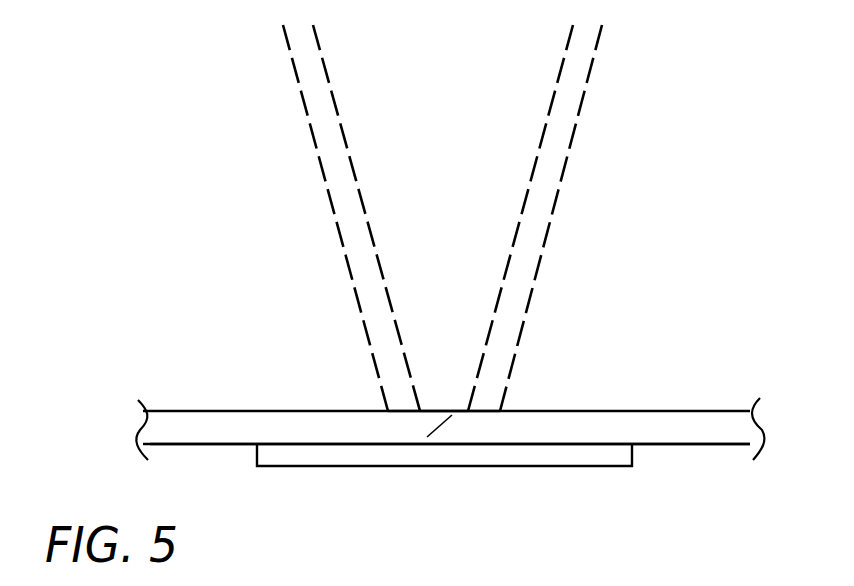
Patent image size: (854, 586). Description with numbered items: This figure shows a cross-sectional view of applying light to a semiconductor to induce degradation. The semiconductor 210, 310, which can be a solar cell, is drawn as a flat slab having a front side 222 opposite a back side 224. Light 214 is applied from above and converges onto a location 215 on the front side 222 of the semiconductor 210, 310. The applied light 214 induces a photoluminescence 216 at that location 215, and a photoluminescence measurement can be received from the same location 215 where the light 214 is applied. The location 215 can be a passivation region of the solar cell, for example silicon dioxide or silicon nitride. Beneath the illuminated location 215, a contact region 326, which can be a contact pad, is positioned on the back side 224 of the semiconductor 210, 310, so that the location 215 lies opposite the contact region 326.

The light 214 is at (337, 108).
The photoluminescence 216 is at (332, 208).
The location 215 is at (441, 411).
The front side 222 is at (207, 400).
The back side 224 is at (219, 457).
The semiconductor 210 is at (410, 438).
The semiconductor 310 is at (512, 438).
The contact region 326 is at (538, 452).